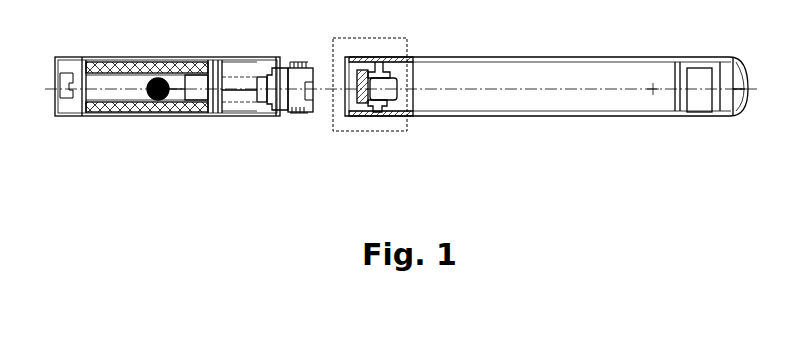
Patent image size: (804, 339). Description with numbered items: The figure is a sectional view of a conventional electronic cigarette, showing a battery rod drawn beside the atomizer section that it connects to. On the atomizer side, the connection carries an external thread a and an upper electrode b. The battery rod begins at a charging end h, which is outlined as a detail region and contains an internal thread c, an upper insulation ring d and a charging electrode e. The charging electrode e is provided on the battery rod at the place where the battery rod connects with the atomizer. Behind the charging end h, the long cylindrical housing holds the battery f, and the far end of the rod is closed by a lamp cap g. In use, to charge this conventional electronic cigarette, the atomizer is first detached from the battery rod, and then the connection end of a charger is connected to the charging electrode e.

The external thread a is at (300, 62).
The upper electrode b is at (307, 112).
The internal thread c is at (348, 116).
The upper insulation ring d is at (373, 112).
The charging electrode e is at (395, 100).
The battery f is at (545, 98).
The lamp cap g is at (734, 116).
The charging end h is at (406, 131).